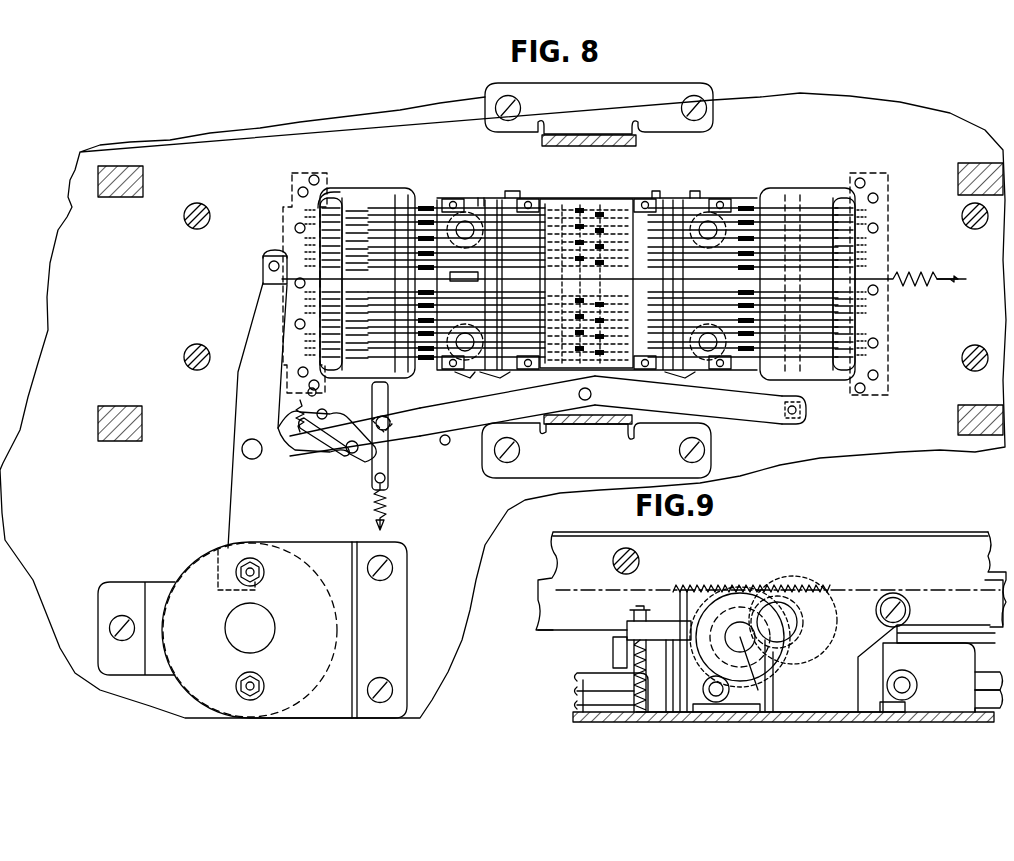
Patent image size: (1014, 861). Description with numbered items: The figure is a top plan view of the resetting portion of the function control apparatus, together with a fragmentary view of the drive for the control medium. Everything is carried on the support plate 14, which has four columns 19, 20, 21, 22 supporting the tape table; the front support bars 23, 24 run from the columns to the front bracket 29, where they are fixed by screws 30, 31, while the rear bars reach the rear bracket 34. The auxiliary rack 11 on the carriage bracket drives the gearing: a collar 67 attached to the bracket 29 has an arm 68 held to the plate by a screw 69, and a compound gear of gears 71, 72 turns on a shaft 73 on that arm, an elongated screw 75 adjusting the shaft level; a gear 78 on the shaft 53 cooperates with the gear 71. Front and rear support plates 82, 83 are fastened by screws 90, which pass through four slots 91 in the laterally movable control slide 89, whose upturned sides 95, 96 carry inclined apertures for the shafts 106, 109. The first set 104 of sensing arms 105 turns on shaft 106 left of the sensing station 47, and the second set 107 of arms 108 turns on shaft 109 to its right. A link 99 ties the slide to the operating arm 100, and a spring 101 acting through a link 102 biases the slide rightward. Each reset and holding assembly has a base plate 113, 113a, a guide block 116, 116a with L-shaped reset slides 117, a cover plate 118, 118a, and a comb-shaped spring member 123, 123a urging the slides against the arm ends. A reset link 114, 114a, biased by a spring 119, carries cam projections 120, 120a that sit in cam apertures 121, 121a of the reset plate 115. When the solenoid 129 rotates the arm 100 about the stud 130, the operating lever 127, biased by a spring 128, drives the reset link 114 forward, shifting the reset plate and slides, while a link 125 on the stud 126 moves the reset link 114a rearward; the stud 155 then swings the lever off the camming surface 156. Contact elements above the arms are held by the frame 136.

In FIG. 9, the auxiliary rack 11 is at (950, 550).
In FIG. 8, the support plate 14 is at (75, 212).
In FIG. 8, the column 19 is at (144, 177).
In FIG. 8, the column 20 is at (972, 165).
In FIG. 8, the column 21 is at (112, 406).
In FIG. 8, the column 22 is at (982, 405).
In FIG. 9, the front support bar 23 is at (542, 634).
In FIG. 9, the front support bar 24 is at (986, 590).
In FIG. 8, the front bracket 29 is at (500, 85).
In FIG. 9, the screw 30 is at (898, 602).
In FIG. 9, the screw 31 is at (688, 604).
In FIG. 8, the rear bracket 34 is at (712, 448).
In FIG. 8, the sensing station 47 is at (587, 181).
In FIG. 9, the shaft 53 is at (790, 622).
In FIG. 9, the collar 67 is at (792, 590).
In FIG. 9, the arm 68 is at (627, 628).
In FIG. 9, the screw 69 is at (632, 614).
In FIG. 9, the gear 71 is at (707, 662).
In FIG. 9, the gear 72 is at (728, 694).
In FIG. 9, the shaft 73 is at (750, 674).
In FIG. 9, the elongated screw 75 is at (667, 686).
In FIG. 9, the gear 78 is at (800, 622).
In FIG. 8, the front support plate 82 is at (515, 207).
In FIG. 8, the rear support plate 83 is at (460, 374).
In FIG. 8, the control slide 89 is at (640, 188).
In FIG. 8, the screw 90 is at (462, 212).
In FIG. 8, the slot 91 is at (474, 216).
In FIG. 8, the upturned side 95 is at (698, 197).
In FIG. 8, the upturned side 96 is at (510, 394).
In FIG. 8, the link 99 is at (263, 273).
In FIG. 8, the operating arm 100 is at (245, 344).
In FIG. 8, the spring 101 is at (930, 281).
In FIG. 8, the link 102 is at (882, 279).
In FIG. 8, the first set of sensing arms 104 is at (466, 429).
In FIG. 8, the sensing arm 105 is at (512, 191).
In FIG. 8, the shaft 106 is at (490, 197).
In FIG. 8, the second set of sensing arms 107 is at (736, 413).
In FIG. 8, the sensing arm 108 is at (656, 197).
In FIG. 8, the shaft 109 is at (676, 388).
In FIG. 9, the base plate 113 is at (576, 708).
In FIG. 9, the base plate 113a is at (985, 709).
In FIG. 8, the reset link 114 is at (376, 392).
In FIG. 8, the reset link 114a is at (798, 410).
In FIG. 8, the reset plate 115 is at (340, 185).
In FIG. 8, the guide block 116 is at (377, 260).
In FIG. 9, the guide block 116 is at (576, 692).
In FIG. 9, the guide block 116a is at (985, 690).
In FIG. 8, the reset slide 117 is at (395, 196).
In FIG. 9, the cover plate 118 is at (576, 676).
In FIG. 9, the cover plate 118a is at (985, 674).
In FIG. 8, the spring 119 is at (388, 510).
In FIG. 8, the cam projection 120 is at (384, 386).
In FIG. 8, the cam projection 120a is at (765, 227).
In FIG. 8, the cam aperture 121 is at (366, 250).
In FIG. 8, the cam aperture 121a is at (800, 267).
In FIG. 8, the comb-shaped spring member 123 is at (288, 222).
In FIG. 8, the comb-shaped spring member 123a is at (886, 226).
In FIG. 8, the link 125 is at (455, 452).
In FIG. 8, the stud 126 is at (580, 394).
In FIG. 8, the operating lever 127 is at (354, 442).
In FIG. 8, the spring 128 is at (282, 440).
In FIG. 8, the solenoid 129 is at (278, 562).
In FIG. 8, the stud 130 is at (242, 447).
In FIG. 9, the housing or frame 136 is at (614, 656).
In FIG. 8, the stud 155 is at (300, 406).
In FIG. 8, the camming surface 156 is at (386, 438).